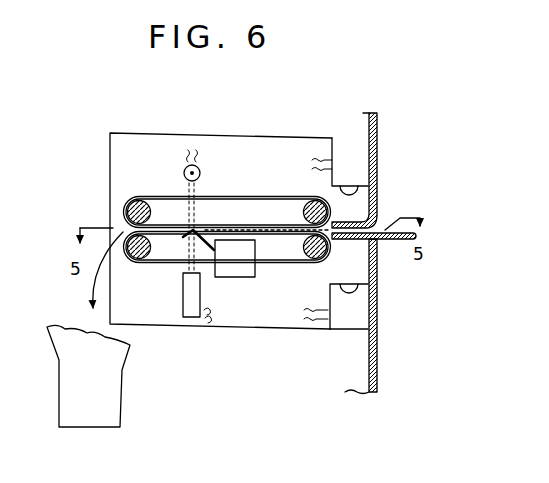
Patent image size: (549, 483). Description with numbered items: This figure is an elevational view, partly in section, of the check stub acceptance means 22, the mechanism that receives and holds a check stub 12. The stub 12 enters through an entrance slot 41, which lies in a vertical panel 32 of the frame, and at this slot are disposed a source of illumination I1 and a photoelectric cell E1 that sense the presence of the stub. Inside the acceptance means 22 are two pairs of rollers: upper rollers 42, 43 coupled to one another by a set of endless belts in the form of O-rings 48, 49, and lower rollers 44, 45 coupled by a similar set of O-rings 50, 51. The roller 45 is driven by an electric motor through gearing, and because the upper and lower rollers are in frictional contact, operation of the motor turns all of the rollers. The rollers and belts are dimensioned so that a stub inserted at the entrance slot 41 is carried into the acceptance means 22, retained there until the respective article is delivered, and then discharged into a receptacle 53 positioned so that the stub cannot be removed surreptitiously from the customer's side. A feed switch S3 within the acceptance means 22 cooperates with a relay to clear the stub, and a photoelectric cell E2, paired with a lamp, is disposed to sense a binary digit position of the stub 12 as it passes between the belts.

The stub 12 is at (198, 169).
The check stub acceptance means 22 is at (92, 200).
The vertical panel 32 is at (374, 158).
The entrance slot 41 is at (372, 229).
The roller 42 is at (311, 206).
The roller 43 is at (141, 202).
The roller 44 is at (313, 262).
The roller 45 is at (142, 252).
The O-ring 48 is at (222, 197).
The O-ring 49 is at (227, 212).
The O-ring 50 is at (268, 262).
The O-ring 51 is at (227, 247).
The receptacle 53 is at (97, 394).
The source of illumination I1 is at (347, 153).
The photoelectric cell E1 is at (353, 318).
The photoelectric cell E2 is at (193, 317).
The switch S3 is at (233, 274).